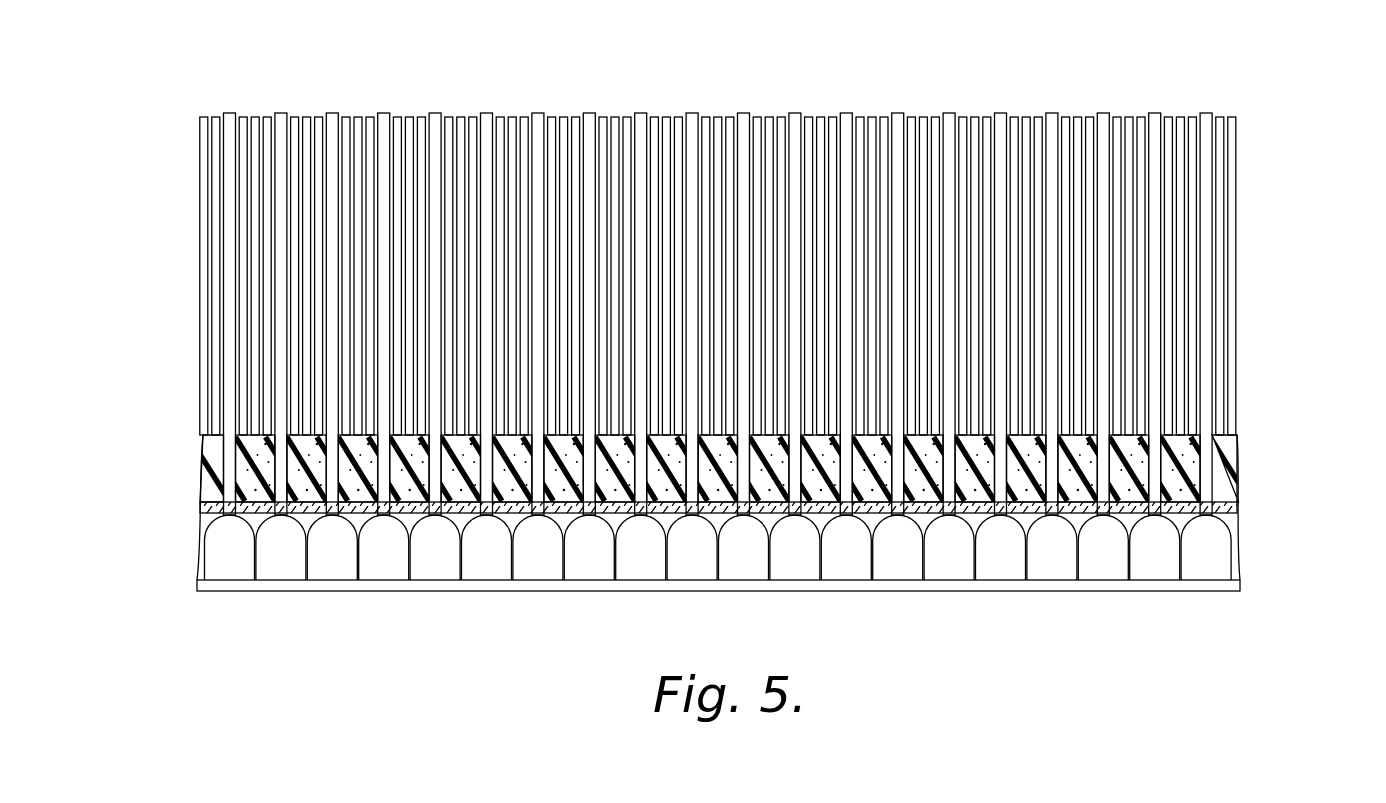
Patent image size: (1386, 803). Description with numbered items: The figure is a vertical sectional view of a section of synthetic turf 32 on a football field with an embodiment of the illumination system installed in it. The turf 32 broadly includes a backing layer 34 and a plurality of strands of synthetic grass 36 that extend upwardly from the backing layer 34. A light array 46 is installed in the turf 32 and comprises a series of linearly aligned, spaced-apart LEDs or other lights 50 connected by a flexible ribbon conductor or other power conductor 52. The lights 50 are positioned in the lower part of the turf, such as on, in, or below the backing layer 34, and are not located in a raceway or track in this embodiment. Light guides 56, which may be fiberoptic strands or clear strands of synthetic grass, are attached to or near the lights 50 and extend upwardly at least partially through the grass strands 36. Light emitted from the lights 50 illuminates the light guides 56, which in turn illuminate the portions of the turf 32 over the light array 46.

The synthetic turf 32 is at (722, 352).
The backing layer 34 is at (1232, 457).
The strands of synthetic grass 36 is at (577, 122).
The light array 46 is at (653, 542).
The lights 50 is at (225, 563).
The power conductor 52 is at (485, 585).
The light guides 56 is at (281, 118).